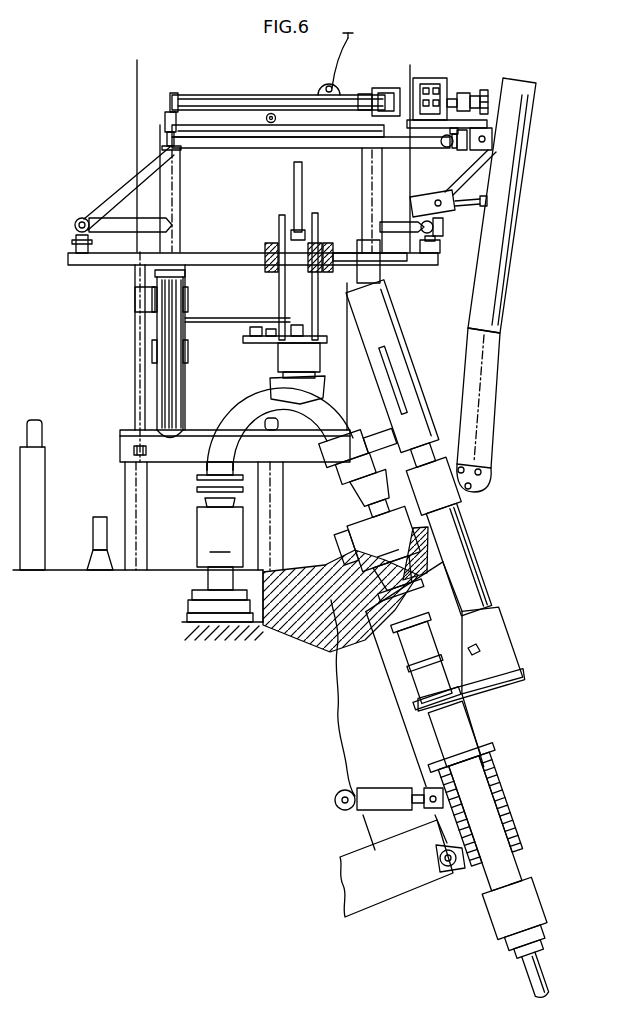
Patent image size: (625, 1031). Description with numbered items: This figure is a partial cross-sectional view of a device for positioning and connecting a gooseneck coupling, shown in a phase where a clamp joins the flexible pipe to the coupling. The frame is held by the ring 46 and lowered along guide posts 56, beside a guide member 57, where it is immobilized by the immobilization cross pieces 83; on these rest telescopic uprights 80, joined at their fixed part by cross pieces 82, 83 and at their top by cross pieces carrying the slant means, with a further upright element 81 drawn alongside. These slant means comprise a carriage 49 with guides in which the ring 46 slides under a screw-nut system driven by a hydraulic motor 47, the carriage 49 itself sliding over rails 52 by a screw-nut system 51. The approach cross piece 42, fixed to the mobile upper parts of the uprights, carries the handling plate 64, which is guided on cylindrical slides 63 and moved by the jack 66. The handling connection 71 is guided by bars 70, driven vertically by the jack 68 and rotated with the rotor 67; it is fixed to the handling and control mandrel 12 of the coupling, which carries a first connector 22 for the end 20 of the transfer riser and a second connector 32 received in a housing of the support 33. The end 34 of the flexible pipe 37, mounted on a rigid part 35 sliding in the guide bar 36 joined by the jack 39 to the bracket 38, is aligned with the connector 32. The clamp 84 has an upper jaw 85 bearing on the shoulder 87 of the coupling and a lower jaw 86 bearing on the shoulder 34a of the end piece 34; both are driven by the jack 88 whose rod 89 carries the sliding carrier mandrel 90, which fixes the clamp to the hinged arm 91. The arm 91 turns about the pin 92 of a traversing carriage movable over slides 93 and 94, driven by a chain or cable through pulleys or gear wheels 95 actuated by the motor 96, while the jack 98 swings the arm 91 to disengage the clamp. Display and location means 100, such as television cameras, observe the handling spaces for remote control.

The handling and control mandrel 12 is at (319, 386).
The end of transfer riser 20 is at (191, 606).
The first connector 22 is at (220, 526).
The second connector 32 is at (382, 557).
The support 33 is at (435, 577).
The end of flexible pipe 34 is at (413, 649).
The shoulder of end piece 34a is at (412, 689).
The rigid part of flexible pipe 35 is at (484, 780).
The guide bar 36 is at (512, 815).
The flexible pipe 37 is at (548, 963).
The bracket 38 is at (382, 893).
The jack 39 is at (390, 797).
The approach cross piece 42 is at (75, 225).
The ring 46 is at (326, 88).
The hydraulic motor 47 is at (392, 88).
The carriage 49 is at (218, 84).
The screw-nut system 51 is at (270, 113).
The rails 52 is at (168, 112).
The guide posts 56 is at (128, 503).
The guide rod 57 is at (135, 92).
The cylindrical slides 63 is at (217, 251).
The handling plate 64 is at (262, 250).
The jack 66 is at (392, 262).
The rotor 67 is at (327, 250).
The jack 68 is at (292, 174).
The bars 70 is at (281, 228).
The handling connection 71 is at (319, 356).
The telescopic uprights 80 is at (178, 176).
The cylinder 81 is at (173, 364).
The cross pieces 82 is at (216, 322).
The immobilization cross pieces 83 is at (125, 438).
The clamp 84 is at (541, 470).
The upper jaw 85 is at (332, 452).
The lower jaw 86 is at (500, 683).
The shoulder of gooseneck coupling 87 is at (345, 476).
The jack 88 is at (379, 319).
The rod 89 is at (467, 545).
The carrier mandrel 90 is at (445, 490).
The arm 91 is at (512, 181).
The pin 92 is at (490, 141).
The slide 93 is at (437, 253).
The slide 94 is at (455, 157).
The pulleys or gear wheels 95 is at (480, 92).
The motor 96 is at (435, 80).
The jack 98 is at (452, 214).
The display and location means 100 is at (247, 343).